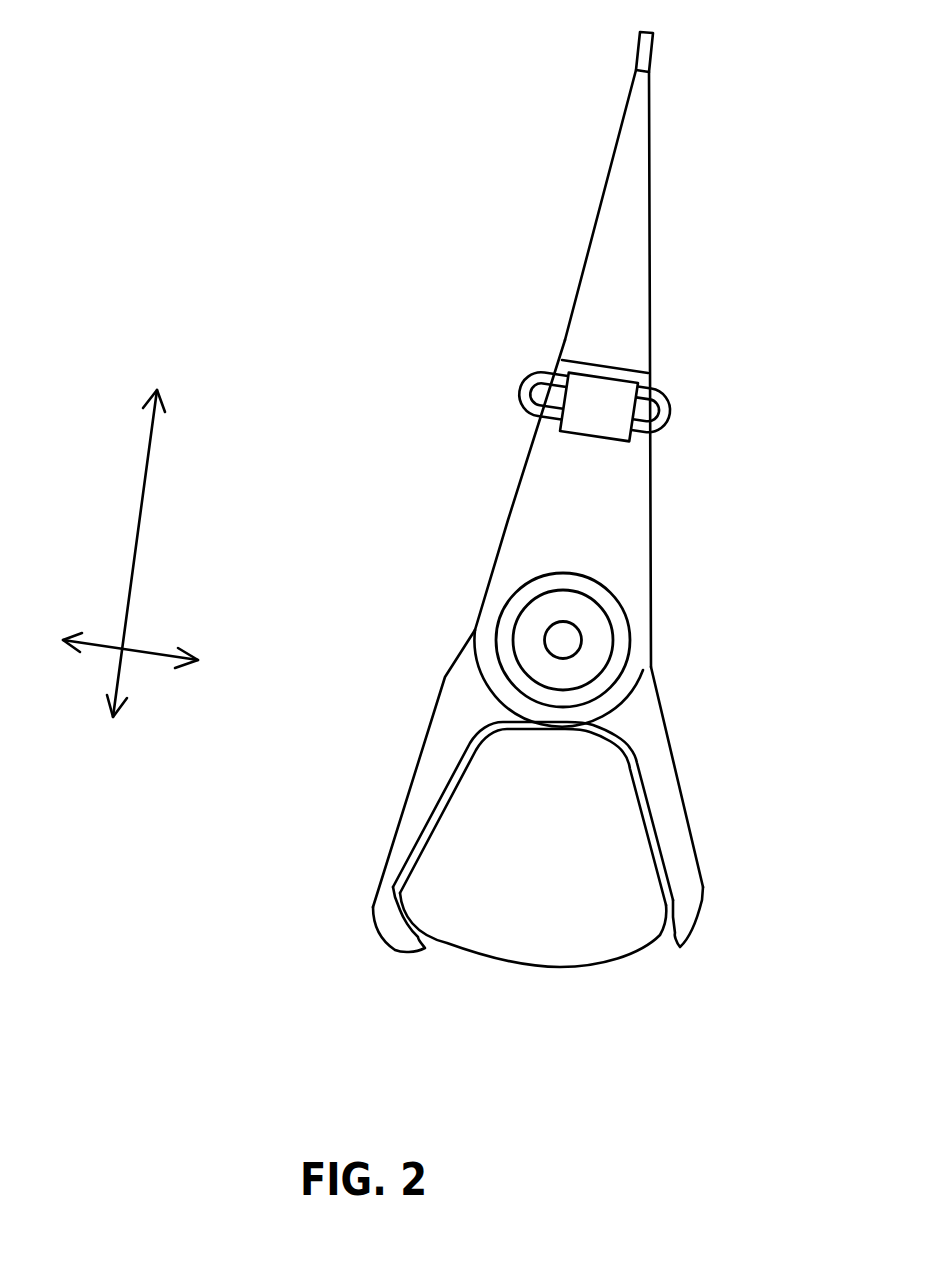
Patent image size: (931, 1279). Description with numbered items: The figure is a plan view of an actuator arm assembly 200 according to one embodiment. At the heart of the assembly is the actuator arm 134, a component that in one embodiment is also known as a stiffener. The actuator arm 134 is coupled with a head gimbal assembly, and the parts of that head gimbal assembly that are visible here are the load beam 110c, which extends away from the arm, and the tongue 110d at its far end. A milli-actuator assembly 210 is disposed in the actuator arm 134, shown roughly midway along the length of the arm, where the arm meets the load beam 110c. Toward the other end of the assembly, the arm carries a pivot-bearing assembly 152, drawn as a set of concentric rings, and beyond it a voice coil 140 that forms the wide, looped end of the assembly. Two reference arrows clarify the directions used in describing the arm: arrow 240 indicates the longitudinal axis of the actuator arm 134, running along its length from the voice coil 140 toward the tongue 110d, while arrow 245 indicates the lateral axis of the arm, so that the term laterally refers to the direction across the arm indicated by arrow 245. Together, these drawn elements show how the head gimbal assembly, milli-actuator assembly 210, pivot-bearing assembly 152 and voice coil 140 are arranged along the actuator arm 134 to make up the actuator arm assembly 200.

The tongue 110d is at (643, 53).
The load beam 110c is at (627, 240).
The milli-actuator assembly 210 is at (682, 417).
The actuator arm 134 is at (538, 477).
The pivot-bearing assembly 152 is at (512, 628).
The actuator arm assembly 200 is at (417, 734).
The voice coil 140 is at (417, 808).
The arrow 240 is at (147, 448).
The arrow 245 is at (92, 650).